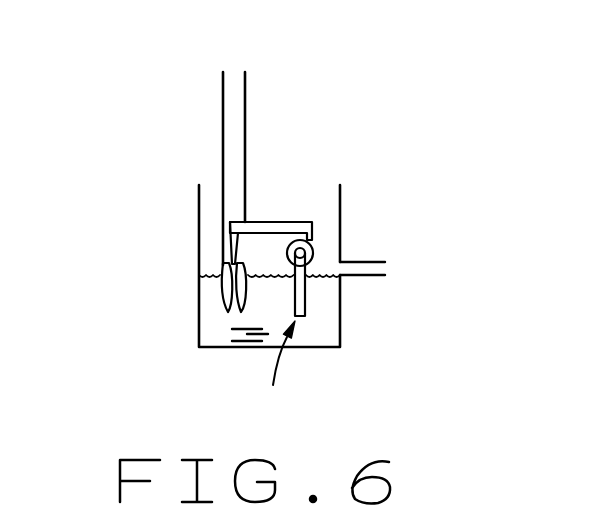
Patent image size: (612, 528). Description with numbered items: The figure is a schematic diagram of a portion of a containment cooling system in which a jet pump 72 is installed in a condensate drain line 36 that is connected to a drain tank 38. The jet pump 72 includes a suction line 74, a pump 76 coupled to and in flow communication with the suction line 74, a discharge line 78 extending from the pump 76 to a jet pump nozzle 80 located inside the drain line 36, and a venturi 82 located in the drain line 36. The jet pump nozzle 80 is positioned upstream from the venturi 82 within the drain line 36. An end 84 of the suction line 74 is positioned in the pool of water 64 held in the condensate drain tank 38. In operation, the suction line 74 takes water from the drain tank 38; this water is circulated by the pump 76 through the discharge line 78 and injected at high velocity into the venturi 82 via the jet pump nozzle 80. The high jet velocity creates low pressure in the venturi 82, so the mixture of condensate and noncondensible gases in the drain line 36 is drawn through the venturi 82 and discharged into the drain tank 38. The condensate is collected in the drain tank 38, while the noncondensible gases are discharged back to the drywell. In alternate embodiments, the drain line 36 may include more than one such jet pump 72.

The condensate drain line 36 is at (247, 92).
The drain tank 38 is at (199, 233).
The condensate drain tank pool of water 64 is at (213, 330).
The jet pump 72 is at (267, 235).
The suction line 74 is at (305, 310).
The pump 76 is at (312, 258).
The discharge line 78 is at (313, 221).
The jet pump nozzle 80 is at (234, 264).
The venturi 82 is at (222, 296).
The end of suction line 84 is at (276, 367).